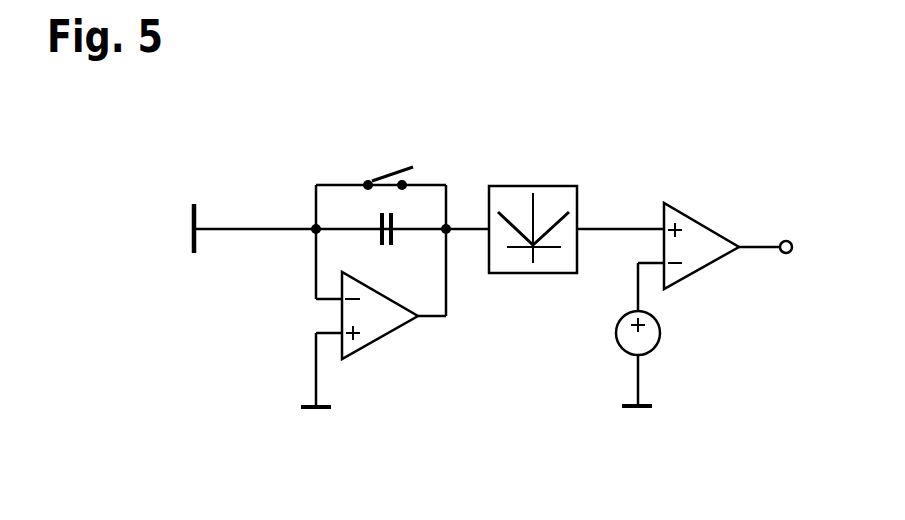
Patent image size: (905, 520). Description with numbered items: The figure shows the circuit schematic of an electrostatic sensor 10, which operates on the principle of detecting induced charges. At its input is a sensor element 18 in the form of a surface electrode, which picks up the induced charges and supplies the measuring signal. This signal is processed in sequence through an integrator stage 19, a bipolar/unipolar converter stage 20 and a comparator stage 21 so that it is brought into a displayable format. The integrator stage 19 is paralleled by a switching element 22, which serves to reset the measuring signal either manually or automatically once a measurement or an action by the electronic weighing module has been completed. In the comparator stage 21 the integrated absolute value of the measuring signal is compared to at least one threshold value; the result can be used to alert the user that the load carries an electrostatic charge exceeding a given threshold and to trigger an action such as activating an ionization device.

The electrostatic sensor 10 is at (602, 131).
The sensor element 18 is at (190, 232).
The integrator stage 19 is at (381, 355).
The bipolar/unipolar converter stage 20 is at (529, 292).
The comparator stage 21 is at (701, 332).
The switching element 22 is at (389, 178).